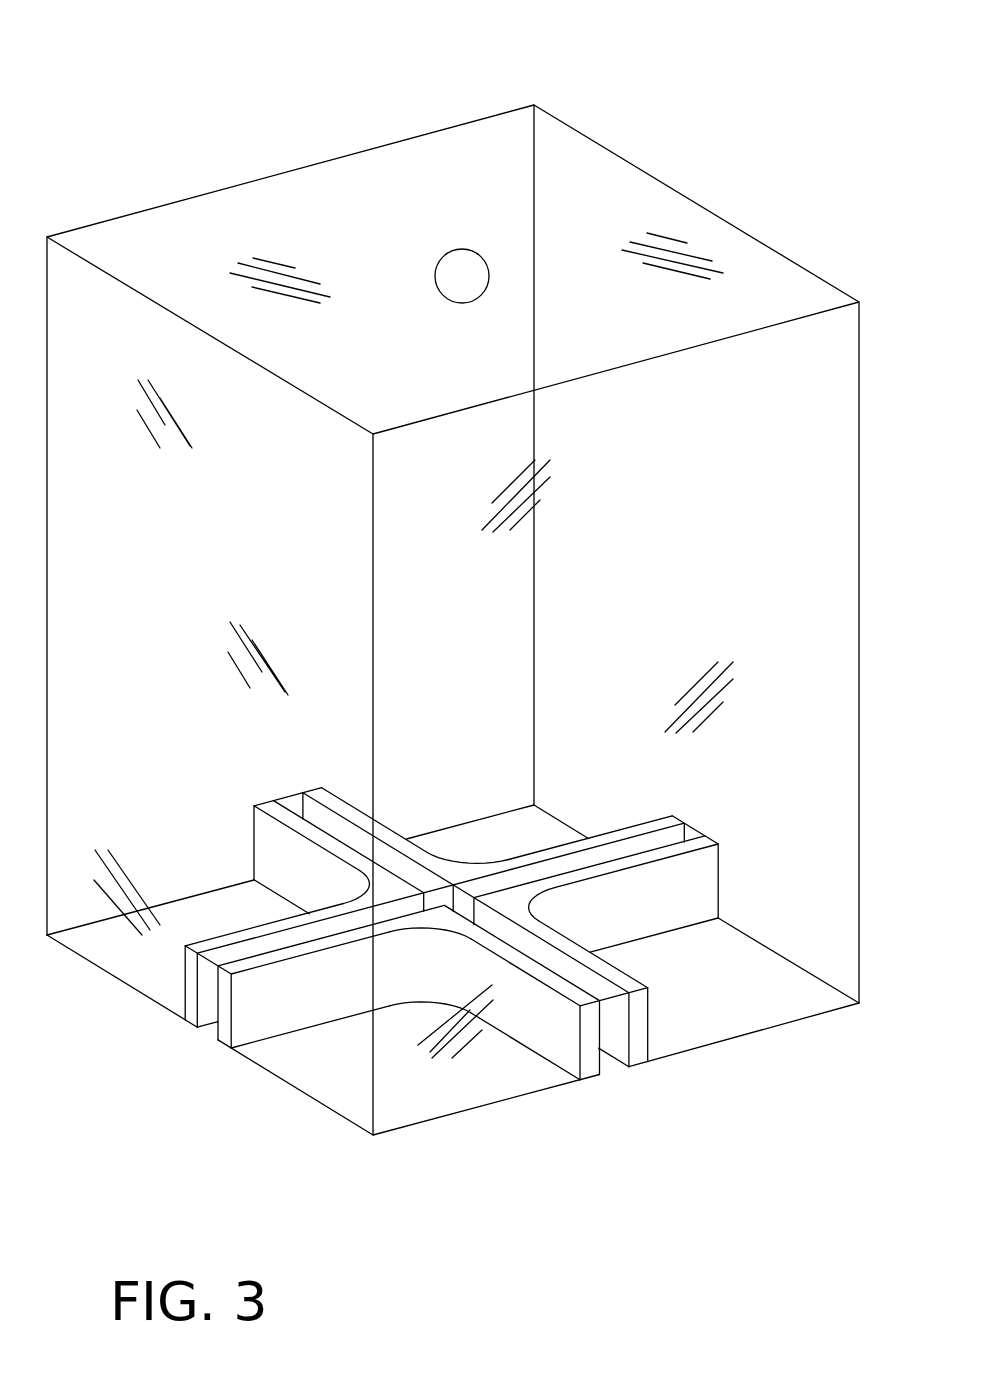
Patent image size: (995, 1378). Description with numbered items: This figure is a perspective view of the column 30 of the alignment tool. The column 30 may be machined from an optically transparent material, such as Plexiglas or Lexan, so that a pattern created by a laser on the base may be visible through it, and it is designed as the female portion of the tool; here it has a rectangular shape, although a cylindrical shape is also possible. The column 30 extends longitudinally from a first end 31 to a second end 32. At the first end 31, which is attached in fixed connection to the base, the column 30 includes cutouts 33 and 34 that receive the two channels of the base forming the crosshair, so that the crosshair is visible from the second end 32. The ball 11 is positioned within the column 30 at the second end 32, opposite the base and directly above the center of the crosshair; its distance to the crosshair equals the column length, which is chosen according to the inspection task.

The column 30 is at (237, 70).
The first end 31 is at (470, 1114).
The second end 32 is at (210, 225).
The cutout 33 is at (208, 1031).
The cutout 34 is at (611, 1064).
The ball 11 is at (466, 256).